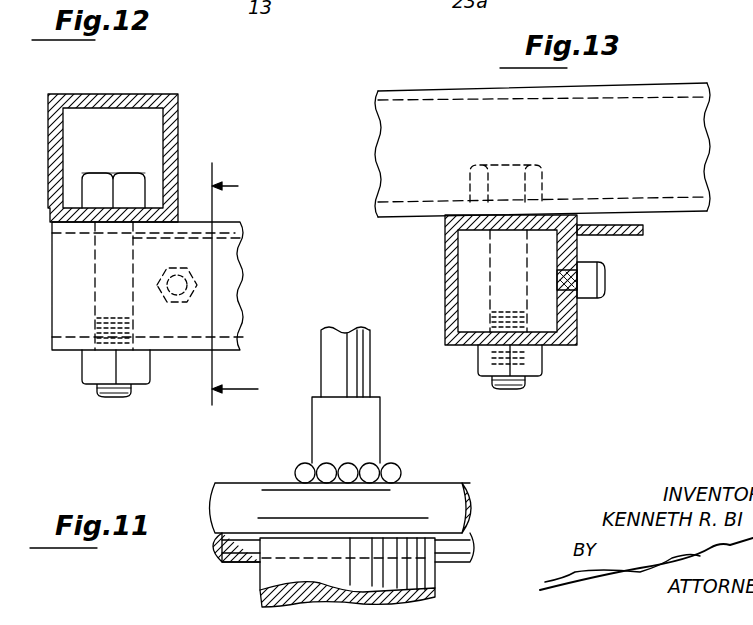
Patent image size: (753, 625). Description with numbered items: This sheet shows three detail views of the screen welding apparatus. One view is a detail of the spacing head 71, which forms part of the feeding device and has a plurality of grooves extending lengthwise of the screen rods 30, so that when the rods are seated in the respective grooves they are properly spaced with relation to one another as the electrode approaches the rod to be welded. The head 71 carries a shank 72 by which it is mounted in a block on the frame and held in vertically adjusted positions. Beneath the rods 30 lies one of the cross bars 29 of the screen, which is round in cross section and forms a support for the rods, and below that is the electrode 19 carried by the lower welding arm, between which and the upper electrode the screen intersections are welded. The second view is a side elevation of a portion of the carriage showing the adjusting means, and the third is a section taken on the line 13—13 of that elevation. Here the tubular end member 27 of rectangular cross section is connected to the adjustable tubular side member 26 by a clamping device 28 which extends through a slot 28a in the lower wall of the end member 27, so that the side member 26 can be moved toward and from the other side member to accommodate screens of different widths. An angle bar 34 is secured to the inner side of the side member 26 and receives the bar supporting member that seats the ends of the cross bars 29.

In FIG. 12, the section line 13— 13 is at (238, 289).
In FIG. 11, the electrode 19 is at (428, 583).
In FIG. 12, the side member 26 is at (230, 222).
In FIG. 13, the side member 26 is at (446, 310).
In FIG. 12, the end member 27 is at (179, 141).
In FIG. 13, the end member 27 is at (393, 148).
In FIG. 12, the clamping device 28 is at (95, 193).
In FIG. 13, the clamping device 28 is at (498, 272).
In FIG. 12, the slot 28a is at (72, 223).
In FIG. 11, the cross bar 29 is at (232, 490).
In FIG. 11, the screen rod 30 is at (399, 470).
In FIG. 12, the angle bar 34 is at (235, 238).
In FIG. 13, the angle bar 34 is at (644, 229).
In FIG. 11, the spacing head 71 is at (374, 420).
In FIG. 11, the shank 72 is at (371, 368).